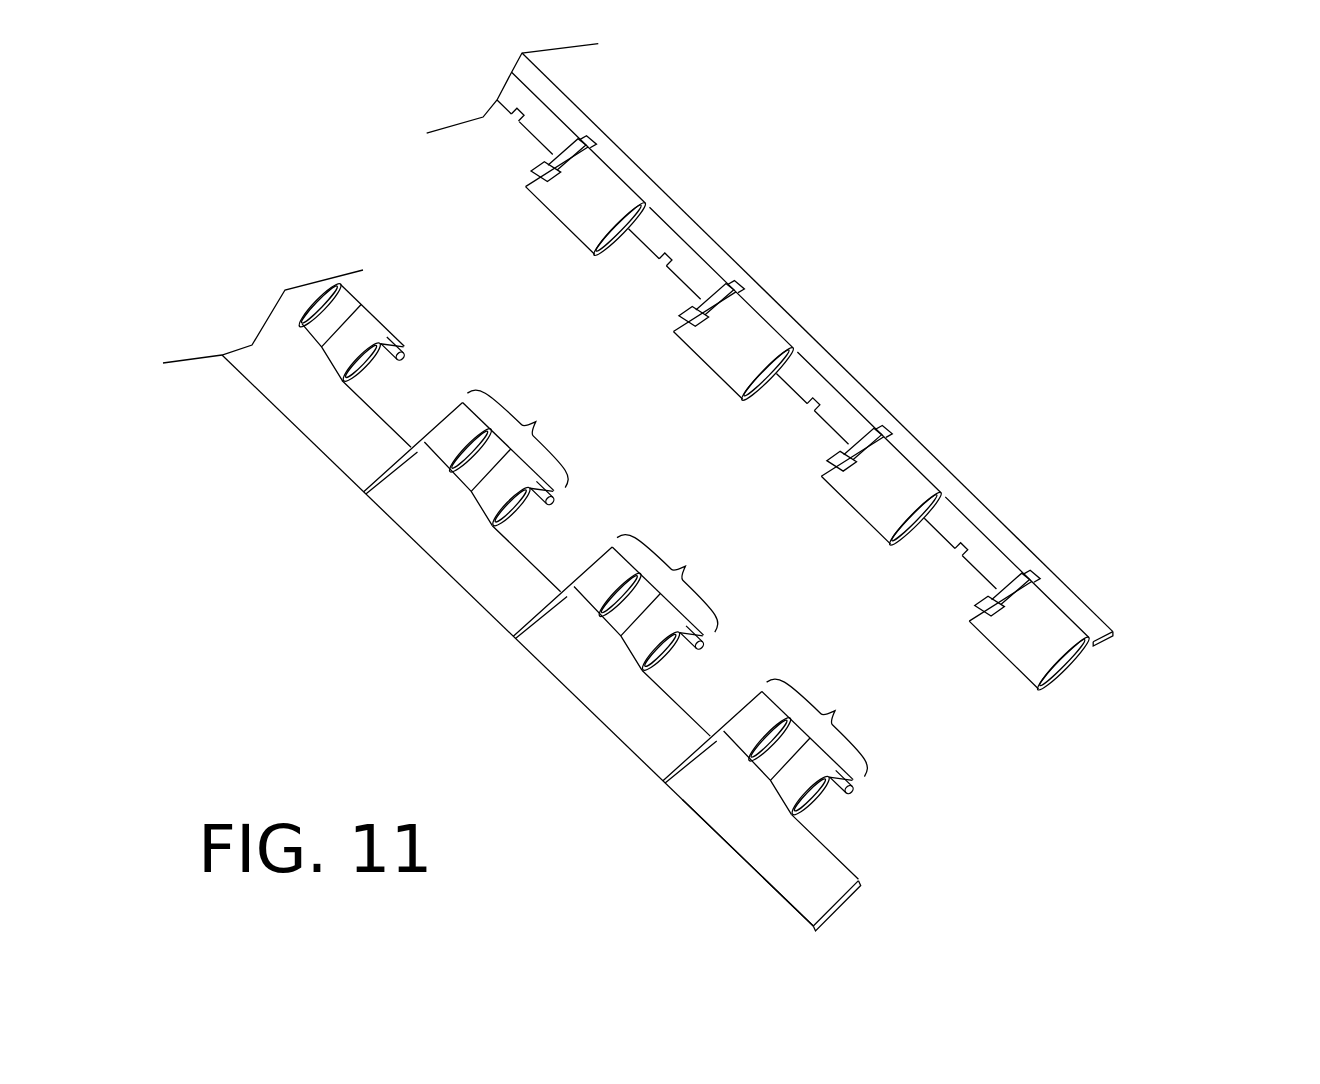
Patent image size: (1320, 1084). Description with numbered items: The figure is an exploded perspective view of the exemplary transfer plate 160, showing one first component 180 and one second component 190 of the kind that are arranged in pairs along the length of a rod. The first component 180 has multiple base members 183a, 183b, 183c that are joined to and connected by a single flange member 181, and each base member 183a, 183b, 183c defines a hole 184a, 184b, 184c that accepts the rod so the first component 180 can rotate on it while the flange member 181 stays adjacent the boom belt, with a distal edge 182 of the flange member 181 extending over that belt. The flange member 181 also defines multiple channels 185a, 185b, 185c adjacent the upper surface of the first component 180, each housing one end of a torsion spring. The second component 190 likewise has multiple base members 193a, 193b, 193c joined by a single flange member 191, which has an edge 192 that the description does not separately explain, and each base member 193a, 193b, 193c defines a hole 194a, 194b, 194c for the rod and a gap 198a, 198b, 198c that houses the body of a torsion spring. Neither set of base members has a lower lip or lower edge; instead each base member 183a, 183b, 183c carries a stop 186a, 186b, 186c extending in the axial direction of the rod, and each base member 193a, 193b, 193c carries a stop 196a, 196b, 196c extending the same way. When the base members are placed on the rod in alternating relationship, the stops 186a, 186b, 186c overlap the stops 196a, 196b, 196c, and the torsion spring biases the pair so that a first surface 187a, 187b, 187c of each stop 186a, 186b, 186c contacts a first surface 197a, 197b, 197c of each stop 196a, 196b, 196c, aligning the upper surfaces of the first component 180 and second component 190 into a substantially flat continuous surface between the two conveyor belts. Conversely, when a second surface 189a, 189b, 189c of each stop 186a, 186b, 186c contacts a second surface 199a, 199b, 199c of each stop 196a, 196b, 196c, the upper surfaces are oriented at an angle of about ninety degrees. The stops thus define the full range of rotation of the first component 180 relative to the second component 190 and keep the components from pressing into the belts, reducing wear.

The transfer plate 160 is at (1036, 209).
The first component 180 is at (632, 157).
The flange member 181 is at (1103, 646).
The distal edge 182 is at (1114, 630).
The base member 183a is at (1010, 662).
The base member 183b is at (862, 528).
The base member 183c is at (710, 381).
The hole 184a is at (1072, 673).
The hole 184b is at (925, 525).
The hole 184c is at (778, 386).
The channel 185a is at (961, 553).
The channel 185b is at (812, 409).
The channel 185c is at (665, 263).
The stop 186a is at (1020, 576).
The stop 186b is at (872, 432).
The stop 186c is at (727, 298).
The first surface 187a is at (1032, 582).
The first surface 187b is at (884, 438).
The first surface 187c is at (742, 292).
The second surface 189a is at (988, 600).
The second surface 189b is at (838, 455).
The second surface 189c is at (692, 300).
The second component 190 is at (268, 402).
The flange member 191 is at (843, 899).
The strip edge 192 is at (712, 828).
The base member 193a is at (822, 723).
The base member 193b is at (672, 578).
The base member 193c is at (522, 434).
The hole 194a is at (812, 826).
The hole 194b is at (662, 682).
The hole 194c is at (512, 538).
The stop 196a is at (856, 790).
The stop 196b is at (706, 645).
The stop 196c is at (558, 500).
The first surface 197a is at (848, 798).
The first surface 197b is at (680, 636).
The first surface 197c is at (532, 500).
The gap 198a is at (760, 766).
The gap 198b is at (612, 622).
The gap 198c is at (462, 478).
The second surface 199a is at (832, 791).
The second surface 199b is at (682, 647).
The second surface 199c is at (532, 503).